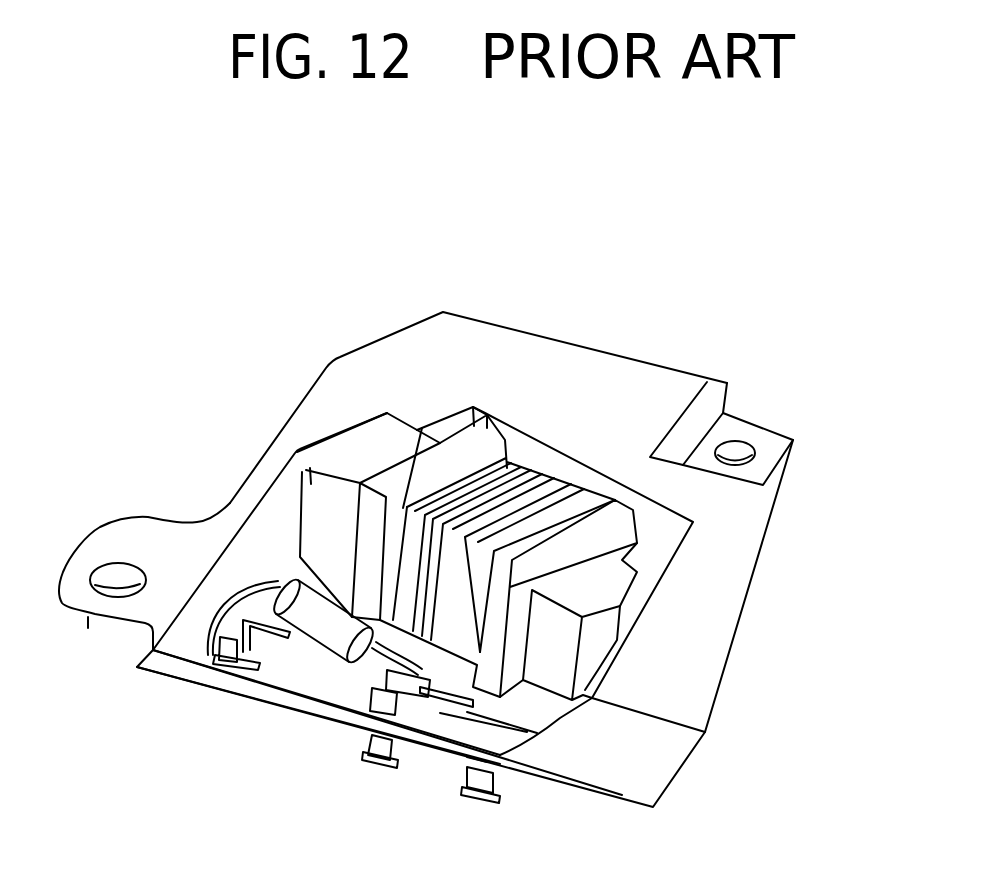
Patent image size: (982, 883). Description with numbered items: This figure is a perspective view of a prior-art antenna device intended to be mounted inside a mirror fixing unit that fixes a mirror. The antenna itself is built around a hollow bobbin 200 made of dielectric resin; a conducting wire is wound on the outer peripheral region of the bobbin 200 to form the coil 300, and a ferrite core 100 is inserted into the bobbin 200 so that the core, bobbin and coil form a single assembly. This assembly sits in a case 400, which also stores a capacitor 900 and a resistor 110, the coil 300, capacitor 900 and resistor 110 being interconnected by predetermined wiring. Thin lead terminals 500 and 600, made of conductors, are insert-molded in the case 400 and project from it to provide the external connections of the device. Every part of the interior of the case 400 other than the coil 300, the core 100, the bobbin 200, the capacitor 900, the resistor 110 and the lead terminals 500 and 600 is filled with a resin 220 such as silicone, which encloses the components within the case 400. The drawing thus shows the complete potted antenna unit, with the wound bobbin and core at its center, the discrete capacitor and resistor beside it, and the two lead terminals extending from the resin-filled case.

The ferrite core 100 is at (377, 445).
The bobbin 200 is at (462, 448).
The coil 300 is at (520, 480).
The case 400 is at (662, 388).
The resin 220 is at (238, 512).
The resistor 110 is at (307, 608).
The capacitor 900 is at (327, 688).
The lead terminal 600 is at (377, 747).
The lead terminal 500 is at (480, 773).